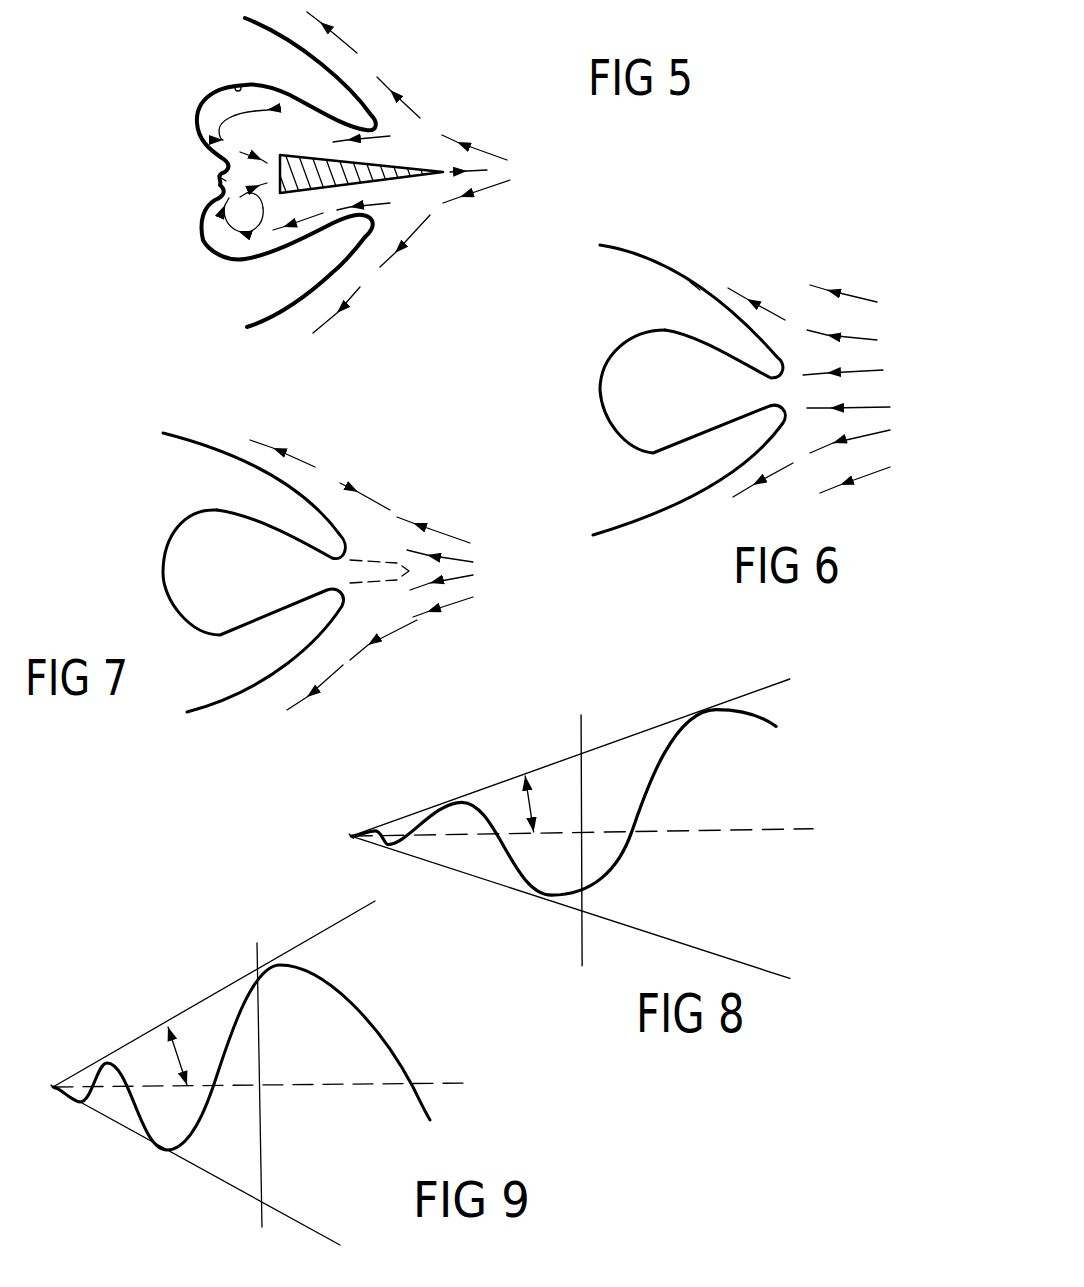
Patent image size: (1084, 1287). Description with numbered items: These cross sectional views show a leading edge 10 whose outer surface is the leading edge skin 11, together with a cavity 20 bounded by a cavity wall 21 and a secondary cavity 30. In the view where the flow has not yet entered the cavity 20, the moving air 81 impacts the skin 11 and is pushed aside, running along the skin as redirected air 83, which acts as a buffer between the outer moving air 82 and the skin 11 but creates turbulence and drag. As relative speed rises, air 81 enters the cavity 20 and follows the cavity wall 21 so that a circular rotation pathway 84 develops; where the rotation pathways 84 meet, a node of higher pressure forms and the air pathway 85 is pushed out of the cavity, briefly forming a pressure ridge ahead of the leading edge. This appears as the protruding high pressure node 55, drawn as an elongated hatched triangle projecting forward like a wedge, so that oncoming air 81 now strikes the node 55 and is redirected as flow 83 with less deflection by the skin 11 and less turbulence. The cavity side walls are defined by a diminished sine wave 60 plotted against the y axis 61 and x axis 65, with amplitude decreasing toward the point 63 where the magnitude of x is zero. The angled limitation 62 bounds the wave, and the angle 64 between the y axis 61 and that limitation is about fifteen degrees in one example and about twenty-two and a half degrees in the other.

In FIG. 5, the leading edge 10 is at (252, 310).
In FIG. 6, the leading edge 10 is at (628, 270).
In FIG. 7, the leading edge 10 is at (170, 448).
In FIG. 6, the leading edge skin 11 is at (676, 272).
In FIG. 7, the leading edge skin 11 is at (227, 453).
In FIG. 5, the cavity 20 is at (203, 127).
In FIG. 6, the cavity 20 is at (650, 440).
In FIG. 7, the cavity 20 is at (227, 613).
In FIG. 5, the cavity wall 21 is at (242, 85).
In FIG. 5, the secondary cavity 30 is at (217, 185).
In FIG. 5, the high pressure node 55 is at (403, 163).
In FIG. 7, the high pressure node 55 is at (390, 557).
In FIG. 8, the diminished sine wave 60 is at (600, 843).
In FIG. 9, the diminished sine wave 60 is at (203, 1113).
In FIG. 8, the y axis 61 is at (725, 817).
In FIG. 9, the y axis 61 is at (305, 1085).
In FIG. 8, the angled limitation 62 is at (483, 873).
In FIG. 9, the angled limitation 62 is at (215, 997).
In FIG. 8, the point 63 is at (347, 827).
In FIG. 9, the point 63 is at (55, 1087).
In FIG. 8, the angle 64 is at (520, 790).
In FIG. 9, the angle 64 is at (182, 1042).
In FIG. 8, the x axis 65 is at (567, 803).
In FIG. 9, the x axis 65 is at (263, 1167).
In FIG. 5, the moving air 81 is at (487, 152).
In FIG. 6, the moving air 81 is at (870, 337).
In FIG. 7, the moving air 81 is at (457, 577).
In FIG. 6, the moving air 82 is at (843, 293).
In FIG. 7, the moving air 82 is at (437, 610).
In FIG. 5, the redirected air flow 83 is at (360, 290).
In FIG. 6, the redirected air flow 83 is at (753, 303).
In FIG. 7, the redirected air flow 83 is at (330, 673).
In FIG. 5, the circular rotation pathway 84 is at (313, 128).
In FIG. 5, the exiting air pathway 85 is at (240, 153).